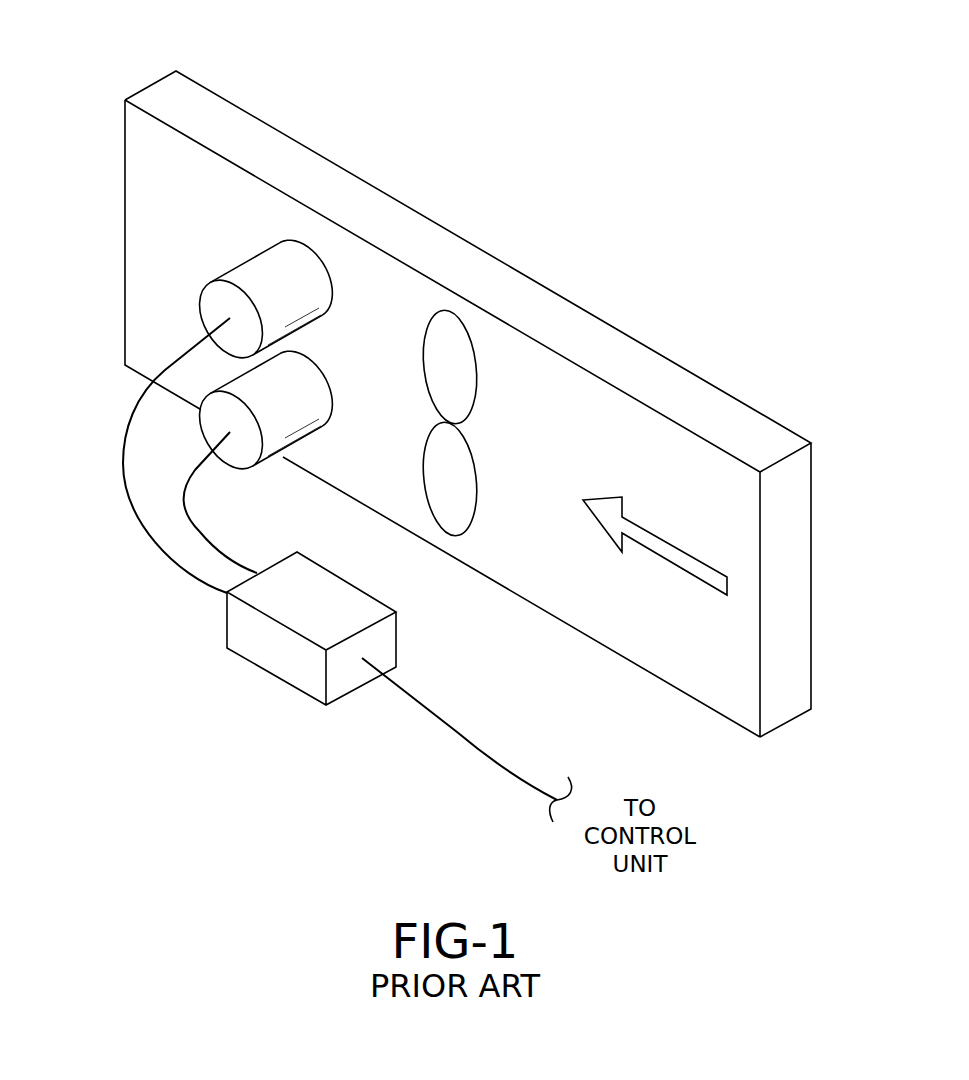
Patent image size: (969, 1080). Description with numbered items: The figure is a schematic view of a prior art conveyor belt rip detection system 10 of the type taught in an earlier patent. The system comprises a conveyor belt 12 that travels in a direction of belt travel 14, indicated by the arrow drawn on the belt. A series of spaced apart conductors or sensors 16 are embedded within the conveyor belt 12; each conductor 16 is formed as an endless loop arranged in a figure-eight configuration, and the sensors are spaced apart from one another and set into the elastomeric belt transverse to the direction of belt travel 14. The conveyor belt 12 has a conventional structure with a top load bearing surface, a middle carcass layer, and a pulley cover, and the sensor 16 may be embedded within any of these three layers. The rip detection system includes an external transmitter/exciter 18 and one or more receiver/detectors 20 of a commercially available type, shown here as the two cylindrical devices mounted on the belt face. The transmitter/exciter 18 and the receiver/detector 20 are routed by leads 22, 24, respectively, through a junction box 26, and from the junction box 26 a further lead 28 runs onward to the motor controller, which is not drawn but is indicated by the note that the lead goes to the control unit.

The conveyor belt rip detection system 10 is at (616, 116).
The conveyor belt 12 is at (670, 372).
The direction of belt travel 14 is at (693, 555).
The conductors or sensors 16 is at (475, 362).
The transmitter/exciter 18 is at (213, 304).
The receiver/detector 20 is at (298, 398).
The lead 22 is at (127, 423).
The lead 24 is at (213, 527).
The junction box 26 is at (283, 658).
The lead 28 is at (457, 732).